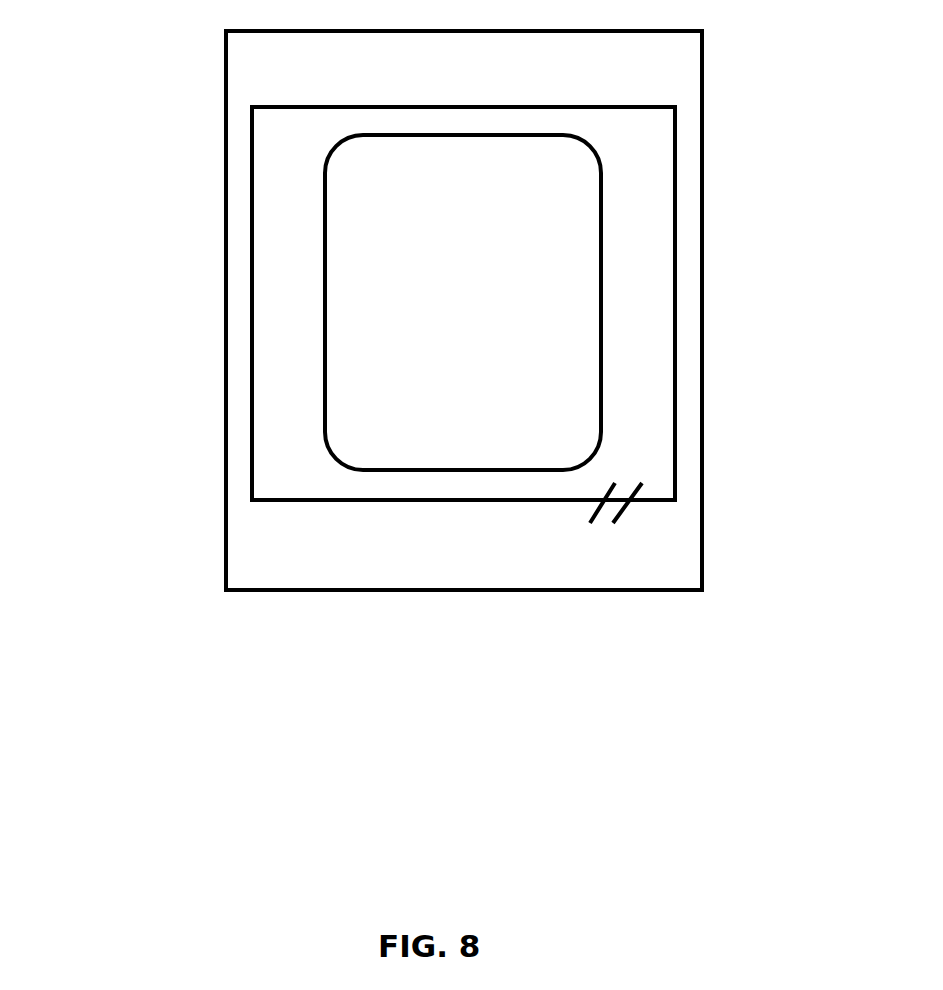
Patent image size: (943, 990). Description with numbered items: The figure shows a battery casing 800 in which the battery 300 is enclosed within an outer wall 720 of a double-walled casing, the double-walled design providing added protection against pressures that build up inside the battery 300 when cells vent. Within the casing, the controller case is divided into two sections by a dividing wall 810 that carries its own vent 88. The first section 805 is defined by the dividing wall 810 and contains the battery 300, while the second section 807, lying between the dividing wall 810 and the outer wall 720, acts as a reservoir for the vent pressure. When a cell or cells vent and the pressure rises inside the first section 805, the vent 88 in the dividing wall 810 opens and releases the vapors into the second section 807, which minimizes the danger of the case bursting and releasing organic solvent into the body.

The assembly 800 is at (113, 145).
The outer wall 720 is at (225, 498).
The second section 807 is at (670, 65).
The first section 805 is at (645, 202).
The dividing wall 810 is at (675, 415).
The battery 300 is at (463, 302).
The vent 88 is at (640, 525).